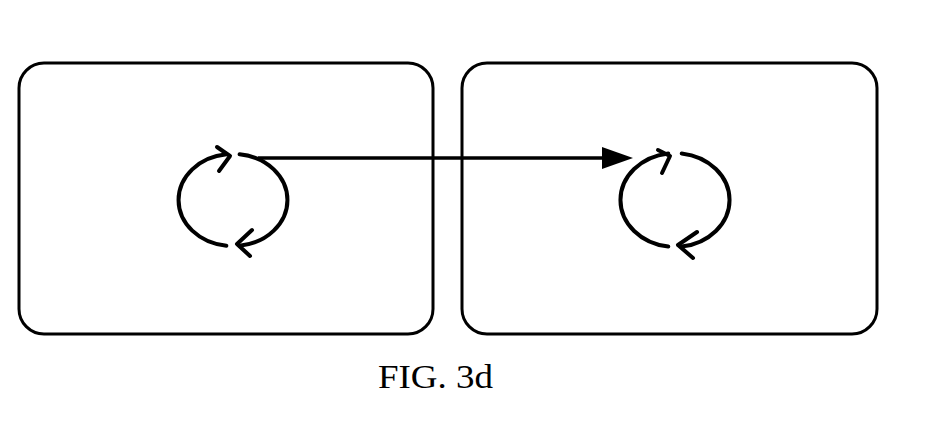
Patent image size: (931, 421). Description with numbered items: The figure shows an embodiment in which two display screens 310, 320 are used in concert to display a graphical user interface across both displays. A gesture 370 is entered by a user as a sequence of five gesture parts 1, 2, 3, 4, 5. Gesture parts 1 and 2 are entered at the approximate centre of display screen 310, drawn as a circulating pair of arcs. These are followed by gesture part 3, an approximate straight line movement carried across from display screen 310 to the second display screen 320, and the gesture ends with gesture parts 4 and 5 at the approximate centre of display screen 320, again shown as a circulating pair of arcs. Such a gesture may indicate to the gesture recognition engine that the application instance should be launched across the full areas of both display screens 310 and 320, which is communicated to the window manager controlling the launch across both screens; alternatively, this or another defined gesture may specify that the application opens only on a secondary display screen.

The display screen 310 is at (357, 63).
The second display screen 320 is at (503, 63).
The gesture 370 is at (263, 219).
The gesture part 1 is at (269, 205).
The gesture part 2 is at (196, 196).
The gesture part 3 is at (445, 149).
The gesture part 4 is at (711, 205).
The gesture part 5 is at (636, 198).